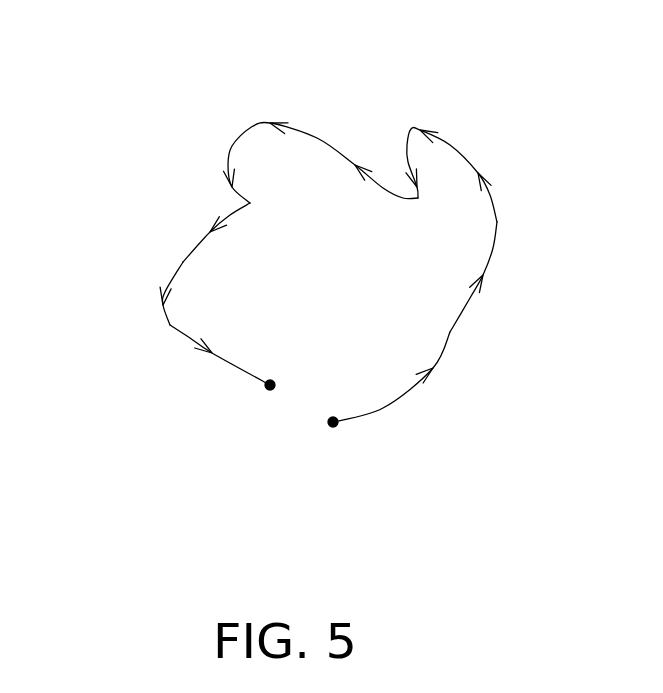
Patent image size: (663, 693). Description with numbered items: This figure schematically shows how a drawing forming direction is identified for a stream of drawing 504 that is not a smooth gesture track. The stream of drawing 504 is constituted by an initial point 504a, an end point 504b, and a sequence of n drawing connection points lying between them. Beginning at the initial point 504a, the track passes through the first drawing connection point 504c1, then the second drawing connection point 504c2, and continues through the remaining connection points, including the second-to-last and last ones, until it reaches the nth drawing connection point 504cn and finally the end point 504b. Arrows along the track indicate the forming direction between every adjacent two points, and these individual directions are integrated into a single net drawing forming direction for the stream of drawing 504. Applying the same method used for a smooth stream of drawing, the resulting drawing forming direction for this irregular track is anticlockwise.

The stream of drawing 504 is at (428, 117).
The initial point 504a is at (328, 435).
The end point 504b is at (268, 407).
The drawing connection point 504c1 is at (416, 377).
The drawing connection point 504c2 is at (506, 277).
The drawing connection point 504cn is at (196, 355).